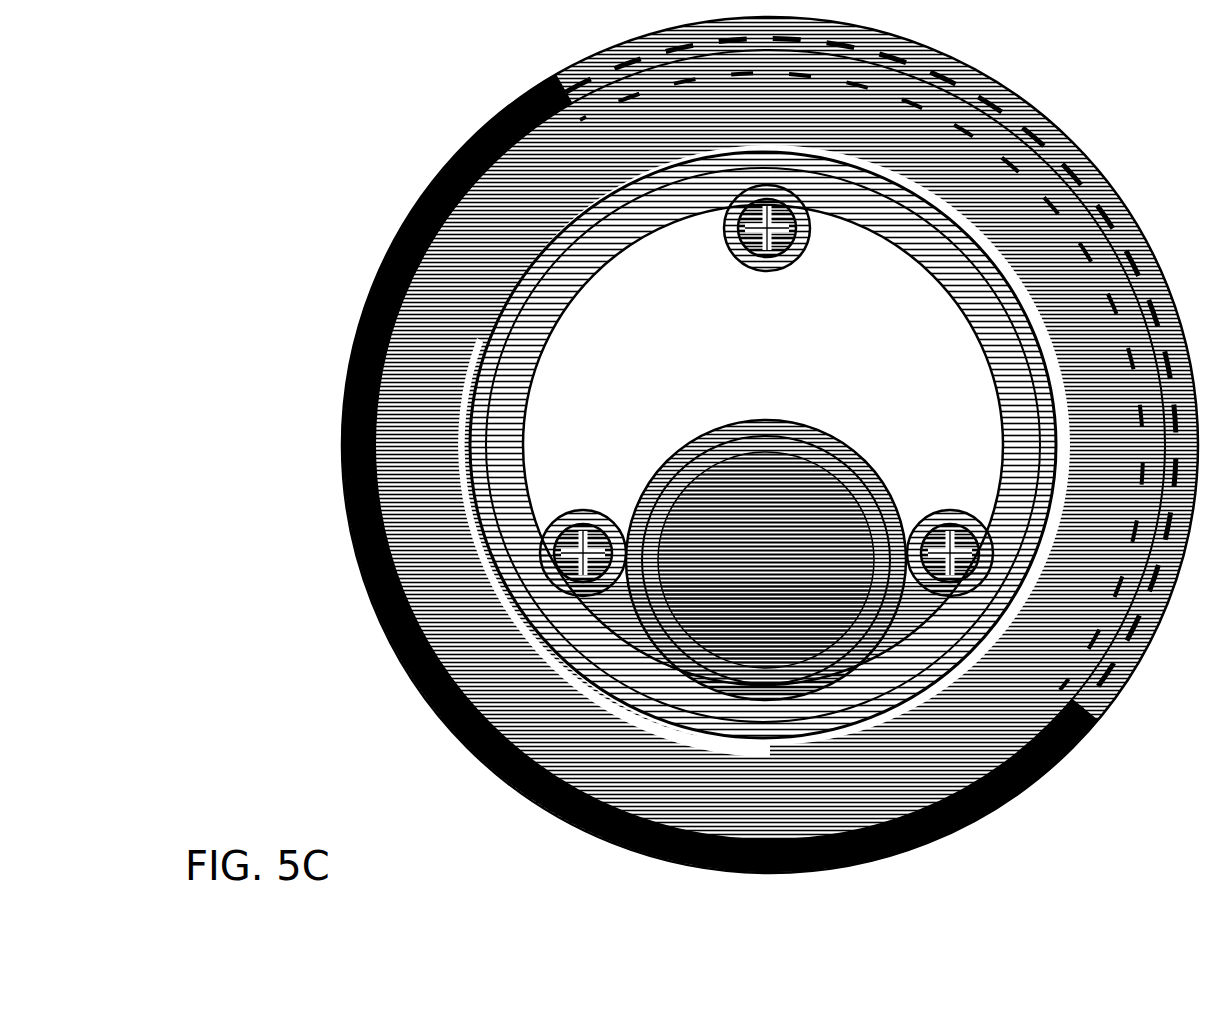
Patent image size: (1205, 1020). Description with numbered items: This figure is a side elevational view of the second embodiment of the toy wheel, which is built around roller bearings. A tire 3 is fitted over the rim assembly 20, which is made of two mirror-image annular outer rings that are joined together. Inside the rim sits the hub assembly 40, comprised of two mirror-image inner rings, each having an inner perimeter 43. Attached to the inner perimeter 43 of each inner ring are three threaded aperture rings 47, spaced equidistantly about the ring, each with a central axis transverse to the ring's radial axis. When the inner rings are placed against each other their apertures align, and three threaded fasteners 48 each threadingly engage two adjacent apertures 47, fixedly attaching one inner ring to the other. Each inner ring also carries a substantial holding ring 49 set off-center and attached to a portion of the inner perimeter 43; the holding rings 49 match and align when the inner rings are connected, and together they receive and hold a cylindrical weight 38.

The tire 3 is at (1092, 178).
The rim assembly 20 is at (1030, 313).
The inner perimeter 43 is at (937, 280).
The hub assembly 40 is at (528, 413).
The holding ring 49 is at (742, 420).
The cylindrical weight 38 is at (800, 556).
The threaded aperture ring 47 is at (737, 255).
The threaded fastener 48 is at (785, 240).